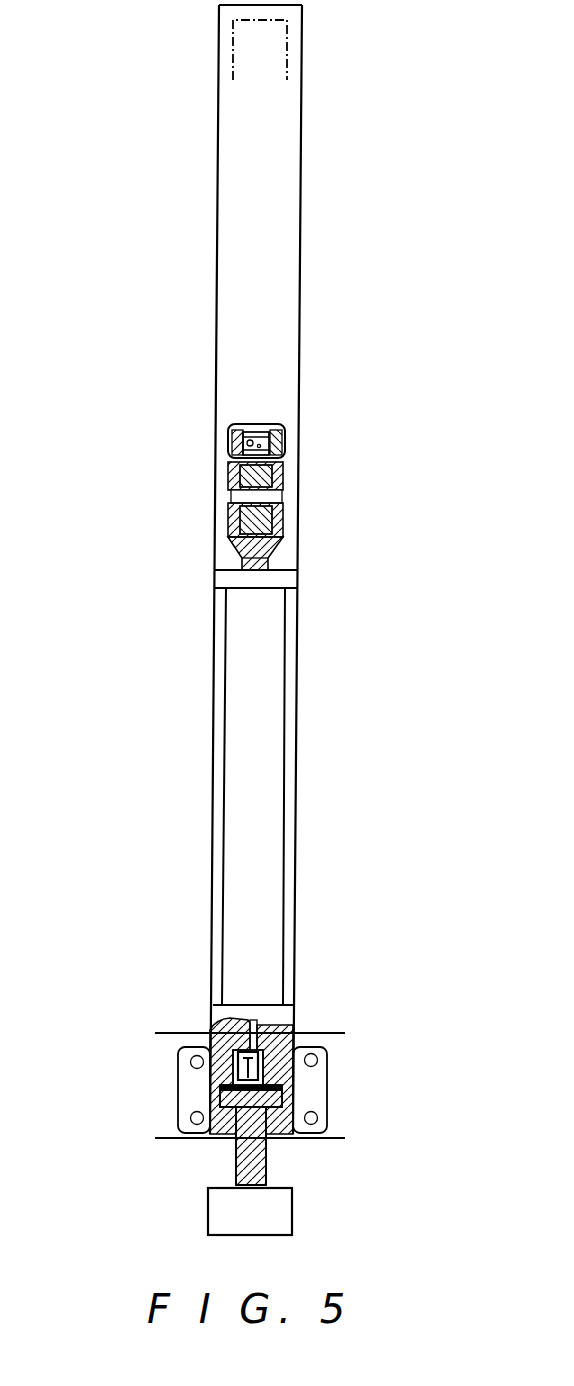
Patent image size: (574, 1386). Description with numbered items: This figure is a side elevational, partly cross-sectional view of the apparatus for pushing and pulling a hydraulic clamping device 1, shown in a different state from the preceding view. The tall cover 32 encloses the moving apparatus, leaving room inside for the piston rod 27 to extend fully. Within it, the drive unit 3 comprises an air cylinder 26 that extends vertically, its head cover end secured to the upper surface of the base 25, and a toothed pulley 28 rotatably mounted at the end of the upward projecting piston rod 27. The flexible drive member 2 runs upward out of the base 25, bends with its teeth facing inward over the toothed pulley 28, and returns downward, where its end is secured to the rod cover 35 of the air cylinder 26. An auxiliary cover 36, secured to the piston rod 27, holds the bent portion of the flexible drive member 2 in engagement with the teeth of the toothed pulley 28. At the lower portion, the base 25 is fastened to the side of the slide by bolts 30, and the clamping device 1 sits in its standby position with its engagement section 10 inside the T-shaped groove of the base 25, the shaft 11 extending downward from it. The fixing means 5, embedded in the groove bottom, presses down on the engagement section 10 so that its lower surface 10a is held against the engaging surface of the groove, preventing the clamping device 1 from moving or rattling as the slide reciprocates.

The hydraulic clamping device 1 is at (293, 1203).
The flexible drive member 2 is at (285, 452).
The drive unit 3 is at (285, 819).
The fixing means 5 is at (267, 1070).
The engagement section 10 is at (250, 1102).
The lower surface of the engagement section 10a is at (220, 1115).
The shaft 11 is at (260, 1157).
The base 25 is at (270, 1030).
The air cylinder 26 is at (259, 667).
The piston rod 27 is at (280, 556).
The toothed pulley 28 is at (281, 511).
The bolts 30 is at (313, 1048).
The cover 32 is at (303, 140).
The rod cover 35 is at (299, 581).
The auxiliary cover 36 is at (283, 427).